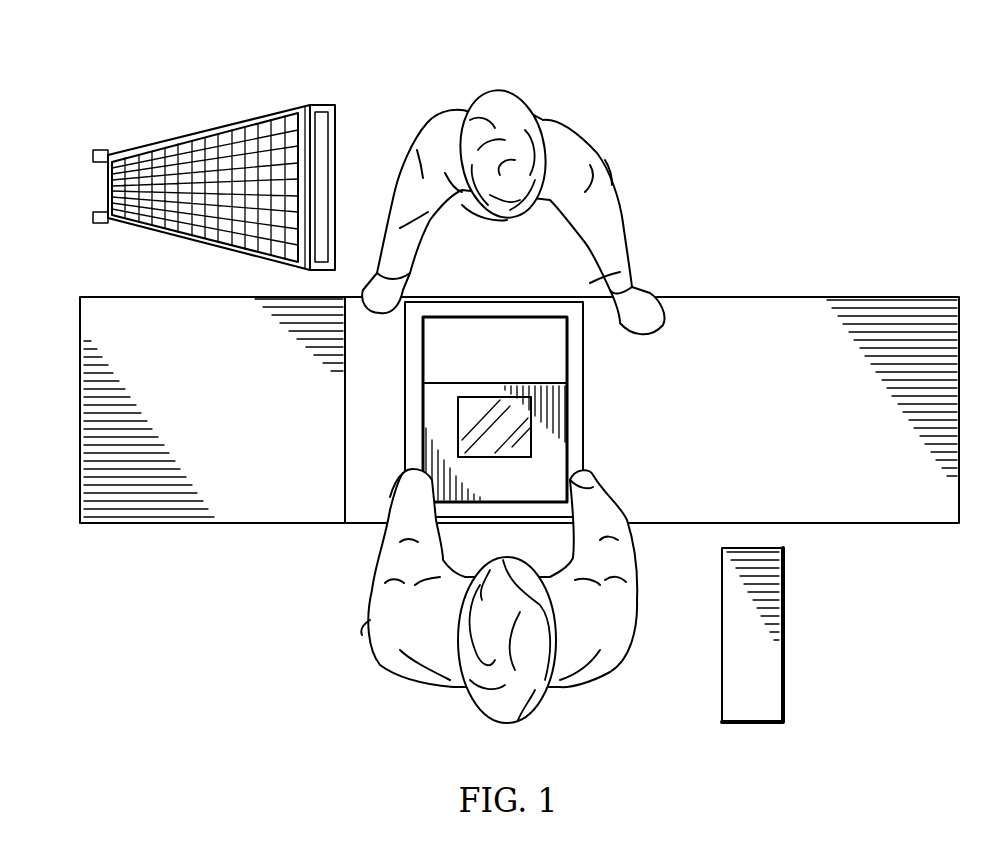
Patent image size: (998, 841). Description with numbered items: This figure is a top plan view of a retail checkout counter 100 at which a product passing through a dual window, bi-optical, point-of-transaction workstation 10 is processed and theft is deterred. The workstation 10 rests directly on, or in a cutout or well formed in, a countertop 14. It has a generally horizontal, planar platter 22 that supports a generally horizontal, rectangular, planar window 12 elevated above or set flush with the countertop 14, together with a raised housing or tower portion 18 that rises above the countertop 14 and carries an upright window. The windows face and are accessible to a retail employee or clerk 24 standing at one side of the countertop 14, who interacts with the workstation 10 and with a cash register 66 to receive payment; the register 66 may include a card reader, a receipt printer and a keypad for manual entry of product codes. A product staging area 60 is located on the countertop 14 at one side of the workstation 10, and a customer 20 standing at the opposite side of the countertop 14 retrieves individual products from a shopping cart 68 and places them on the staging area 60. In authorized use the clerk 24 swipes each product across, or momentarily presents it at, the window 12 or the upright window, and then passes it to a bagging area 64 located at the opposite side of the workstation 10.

The checkout counter 100 is at (738, 92).
The point-of-transaction workstation 10 is at (568, 384).
The horizontal window 12 is at (514, 458).
The countertop 14 is at (903, 308).
The tower portion 18 is at (495, 316).
The customer 20 is at (500, 90).
The platter 22 is at (437, 397).
The clerk 24 is at (375, 626).
The product staging area 60 is at (837, 501).
The bagging area 64 is at (84, 407).
The cash register 66 is at (783, 637).
The shopping cart 68 is at (210, 130).